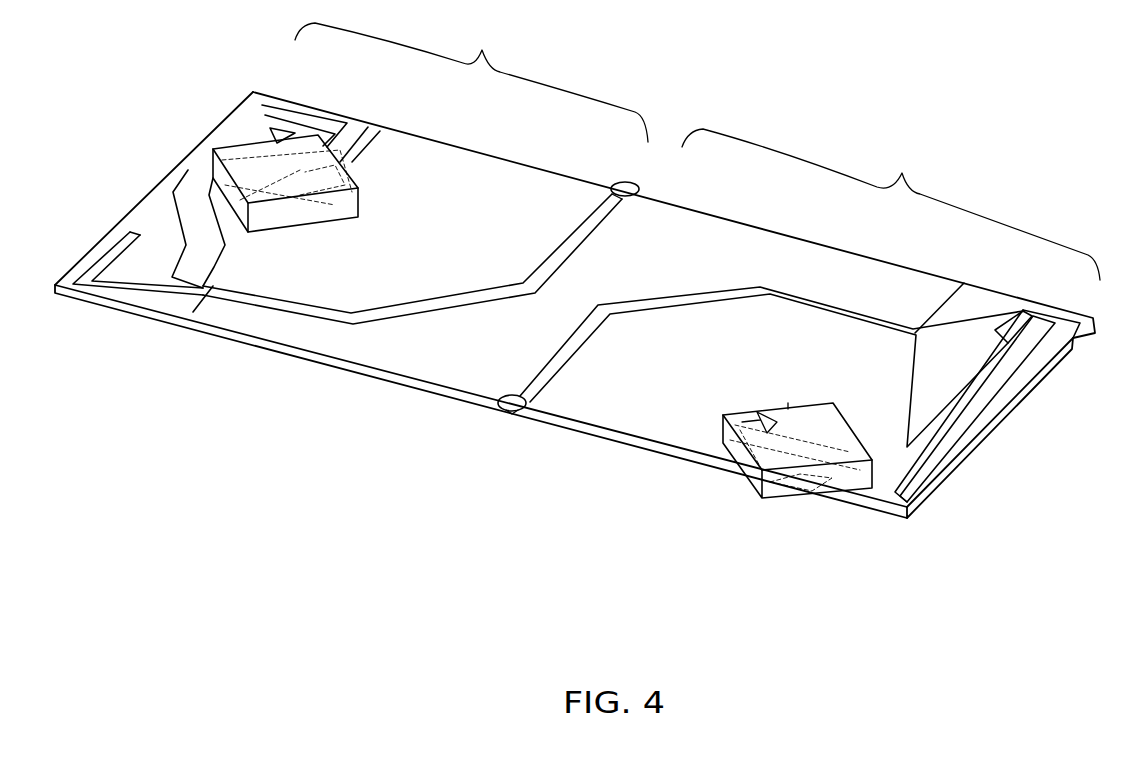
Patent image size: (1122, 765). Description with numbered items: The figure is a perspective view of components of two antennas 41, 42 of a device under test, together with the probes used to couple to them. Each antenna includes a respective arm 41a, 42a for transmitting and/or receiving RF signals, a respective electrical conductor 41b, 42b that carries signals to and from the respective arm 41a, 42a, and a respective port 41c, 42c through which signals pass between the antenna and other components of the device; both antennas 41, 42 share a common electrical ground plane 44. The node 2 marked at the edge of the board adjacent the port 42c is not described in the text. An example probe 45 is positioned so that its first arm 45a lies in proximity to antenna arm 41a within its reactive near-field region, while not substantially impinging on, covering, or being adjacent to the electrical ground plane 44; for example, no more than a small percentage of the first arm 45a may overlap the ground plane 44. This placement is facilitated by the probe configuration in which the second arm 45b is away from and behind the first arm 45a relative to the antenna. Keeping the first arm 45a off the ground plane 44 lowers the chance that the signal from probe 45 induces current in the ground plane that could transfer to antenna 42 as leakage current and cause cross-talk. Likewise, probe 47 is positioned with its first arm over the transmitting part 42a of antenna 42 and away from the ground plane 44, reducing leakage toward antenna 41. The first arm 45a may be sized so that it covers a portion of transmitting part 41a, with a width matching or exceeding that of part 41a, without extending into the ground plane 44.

The connection point 2 is at (634, 187).
The antenna 41 is at (891, 231).
The arm 41a is at (873, 513).
The electrical conductor 41b is at (758, 292).
The port 41c is at (507, 416).
The antenna 42 is at (471, 79).
The arm 42a is at (200, 177).
The electrical conductor 42b is at (405, 303).
The port 42c is at (611, 192).
The electrical ground plane 44 is at (608, 402).
The probe 45 is at (739, 497).
The first arm 45a is at (833, 478).
The second arm 45b is at (743, 421).
The probe 47 is at (277, 135).